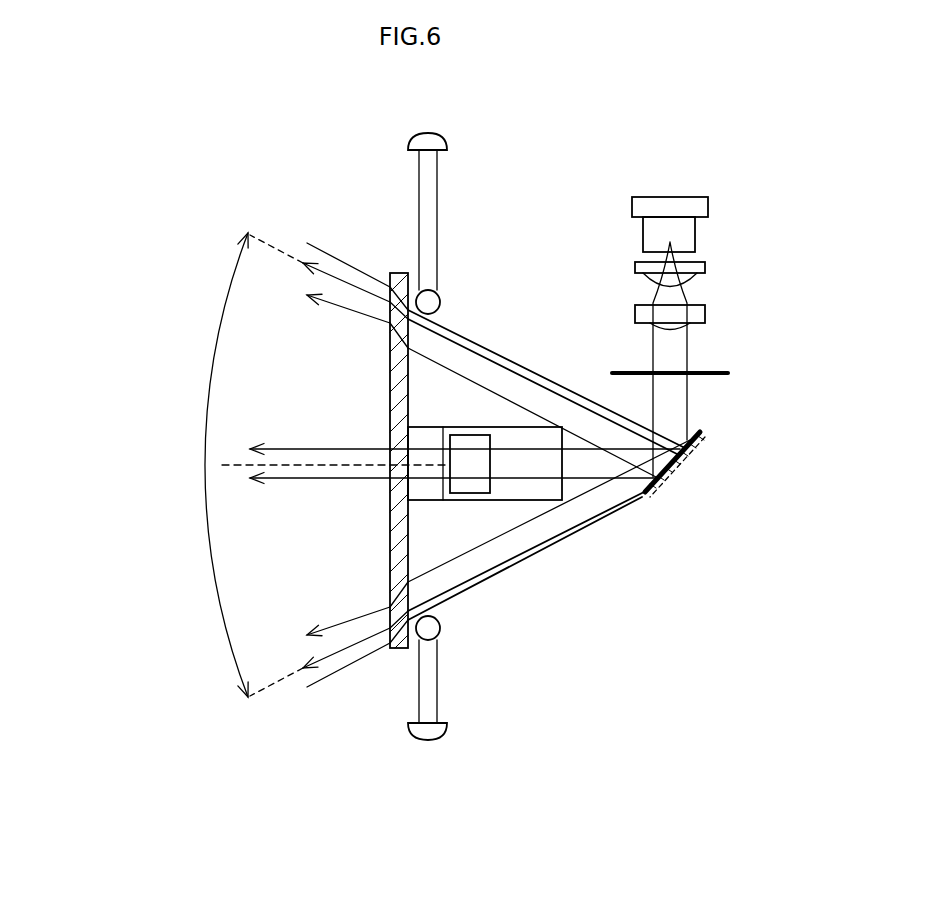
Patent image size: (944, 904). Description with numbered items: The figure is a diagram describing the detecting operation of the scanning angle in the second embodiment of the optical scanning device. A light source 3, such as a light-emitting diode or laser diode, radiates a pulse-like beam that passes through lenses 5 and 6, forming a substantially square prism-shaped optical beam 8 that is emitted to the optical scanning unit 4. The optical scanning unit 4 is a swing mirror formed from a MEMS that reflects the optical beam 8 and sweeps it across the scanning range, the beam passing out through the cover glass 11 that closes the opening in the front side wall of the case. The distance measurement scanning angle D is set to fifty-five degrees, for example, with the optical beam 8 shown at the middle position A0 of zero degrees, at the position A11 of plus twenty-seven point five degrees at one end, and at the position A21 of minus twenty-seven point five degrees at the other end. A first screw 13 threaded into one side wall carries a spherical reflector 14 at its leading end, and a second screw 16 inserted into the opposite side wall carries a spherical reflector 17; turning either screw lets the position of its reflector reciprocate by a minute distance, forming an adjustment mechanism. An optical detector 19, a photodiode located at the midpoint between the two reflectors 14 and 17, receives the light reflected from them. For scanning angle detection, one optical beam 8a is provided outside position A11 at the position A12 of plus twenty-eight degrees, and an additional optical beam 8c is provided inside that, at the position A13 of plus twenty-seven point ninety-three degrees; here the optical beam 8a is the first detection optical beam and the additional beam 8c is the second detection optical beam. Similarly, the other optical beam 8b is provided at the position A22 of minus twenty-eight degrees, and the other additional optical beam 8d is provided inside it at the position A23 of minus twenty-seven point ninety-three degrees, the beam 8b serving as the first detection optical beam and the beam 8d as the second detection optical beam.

The light source 3 is at (710, 206).
The optical scanning unit 4 is at (684, 470).
The lens 5 is at (706, 267).
The lens 6 is at (706, 313).
The optical beam 8 is at (286, 448).
The optical beam for scanning angle detection 8a is at (333, 257).
The optical beam for scanning angle detection 8b is at (334, 673).
The additional optical beam for scanning angle detection 8c is at (316, 255).
The additional optical beam for scanning angle detection 8d is at (311, 667).
The cover glass 11 is at (390, 388).
The first screw 13 is at (427, 132).
The reflector 14 is at (441, 300).
The second screw 16 is at (428, 742).
The reflector 17 is at (441, 628).
The optical detector 19 is at (470, 494).
The position A0 is at (388, 466).
The position A11 is at (388, 315).
The position A12 is at (390, 288).
The position A13 is at (370, 316).
The position A21 is at (390, 624).
The position A22 is at (390, 650).
The position A23 is at (368, 615).
The scanning angle D is at (205, 463).